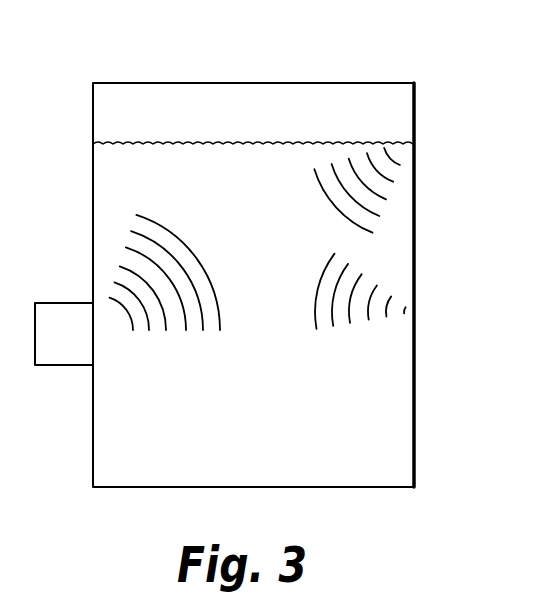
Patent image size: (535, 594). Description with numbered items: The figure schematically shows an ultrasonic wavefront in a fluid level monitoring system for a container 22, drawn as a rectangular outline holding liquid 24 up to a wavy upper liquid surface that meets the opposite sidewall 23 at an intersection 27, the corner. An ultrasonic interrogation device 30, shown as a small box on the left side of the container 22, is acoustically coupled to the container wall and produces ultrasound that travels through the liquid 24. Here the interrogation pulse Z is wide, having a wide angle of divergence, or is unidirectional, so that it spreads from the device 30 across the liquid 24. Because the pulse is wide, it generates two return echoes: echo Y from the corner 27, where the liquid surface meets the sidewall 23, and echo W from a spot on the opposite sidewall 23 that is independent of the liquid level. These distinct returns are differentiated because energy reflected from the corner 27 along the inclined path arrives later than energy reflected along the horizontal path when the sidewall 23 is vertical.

The container 22 is at (193, 83).
The sidewall 23 is at (414, 255).
The liquid 24 is at (256, 416).
The intersection 27 is at (405, 145).
The ultrasonic interrogation device 30 is at (45, 303).
The interrogation pulse Z is at (172, 232).
The return echo Y is at (330, 200).
The return echo W is at (320, 282).